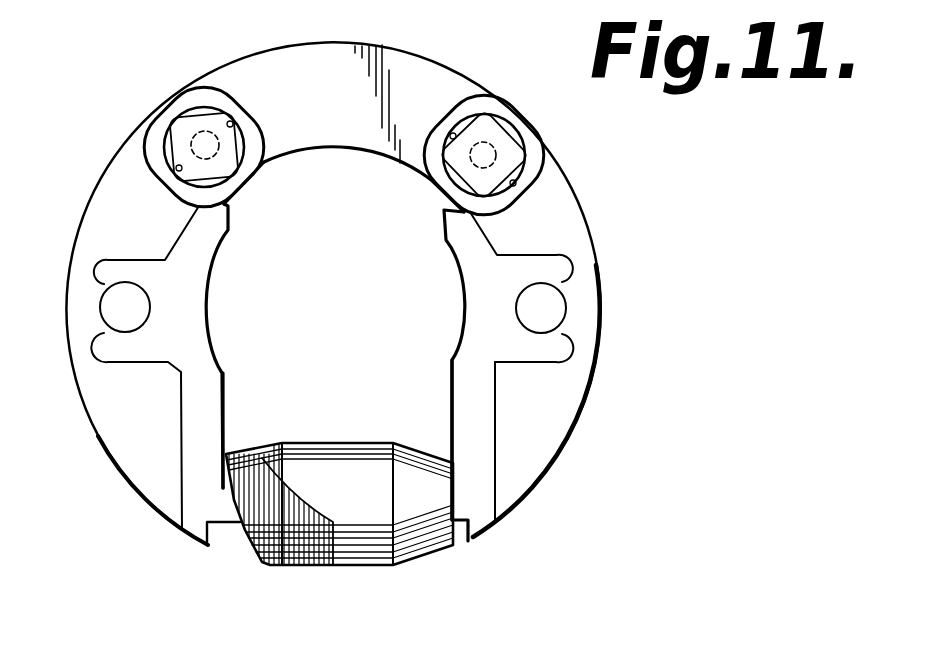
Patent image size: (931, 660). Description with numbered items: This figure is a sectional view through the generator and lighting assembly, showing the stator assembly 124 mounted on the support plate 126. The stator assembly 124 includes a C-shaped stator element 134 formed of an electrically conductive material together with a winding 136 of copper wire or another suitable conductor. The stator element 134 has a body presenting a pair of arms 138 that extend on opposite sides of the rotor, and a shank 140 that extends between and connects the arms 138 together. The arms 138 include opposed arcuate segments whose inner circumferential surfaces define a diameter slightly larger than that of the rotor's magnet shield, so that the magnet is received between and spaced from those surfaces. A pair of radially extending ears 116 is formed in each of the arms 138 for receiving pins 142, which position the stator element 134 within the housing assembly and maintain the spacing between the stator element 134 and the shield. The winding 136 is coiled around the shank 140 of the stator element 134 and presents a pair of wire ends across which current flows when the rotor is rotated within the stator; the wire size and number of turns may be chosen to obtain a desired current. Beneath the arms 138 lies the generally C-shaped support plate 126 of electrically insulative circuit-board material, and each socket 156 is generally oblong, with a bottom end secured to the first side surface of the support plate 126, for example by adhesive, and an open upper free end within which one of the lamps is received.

The radially extending ears 116 is at (106, 266).
The stator assembly 124 is at (326, 254).
The support plate 126 is at (318, 57).
The stator element 134 is at (496, 432).
The winding 136 is at (304, 565).
The arms 138 is at (212, 383).
The shank 140 is at (221, 518).
The pins 142 is at (112, 308).
The socket 156 is at (194, 107).